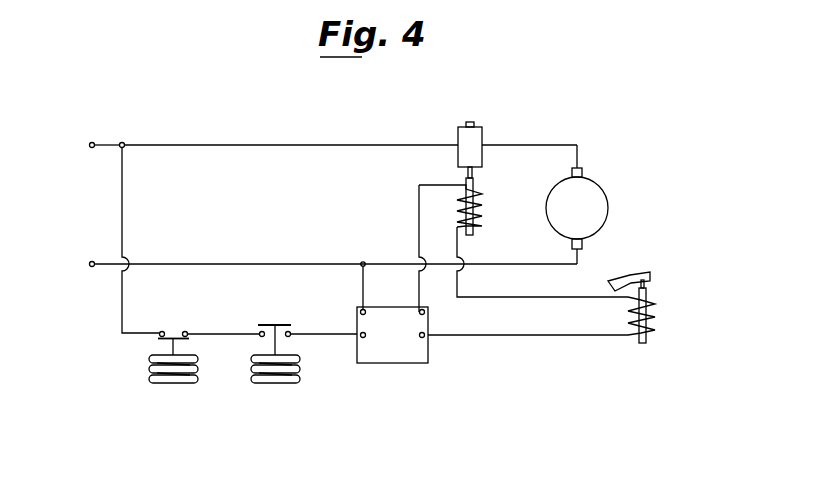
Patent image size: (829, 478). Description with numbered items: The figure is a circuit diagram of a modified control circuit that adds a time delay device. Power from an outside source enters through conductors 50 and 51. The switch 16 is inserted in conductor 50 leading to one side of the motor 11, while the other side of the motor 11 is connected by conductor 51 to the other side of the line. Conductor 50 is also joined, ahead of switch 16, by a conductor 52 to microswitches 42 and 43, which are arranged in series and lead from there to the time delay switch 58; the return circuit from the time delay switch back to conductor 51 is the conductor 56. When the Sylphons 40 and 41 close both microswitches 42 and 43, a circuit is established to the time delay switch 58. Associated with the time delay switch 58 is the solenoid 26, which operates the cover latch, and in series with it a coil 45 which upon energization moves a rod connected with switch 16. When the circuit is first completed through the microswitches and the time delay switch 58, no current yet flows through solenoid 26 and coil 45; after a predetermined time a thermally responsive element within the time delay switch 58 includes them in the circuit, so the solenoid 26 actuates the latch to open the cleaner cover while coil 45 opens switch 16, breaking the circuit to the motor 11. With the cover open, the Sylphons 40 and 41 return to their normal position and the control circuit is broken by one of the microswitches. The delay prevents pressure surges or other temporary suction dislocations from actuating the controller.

The conductor 50 is at (233, 143).
The conductor 51 is at (233, 262).
The conductor 52 is at (124, 228).
The switch 16 is at (477, 135).
The coil 45 is at (478, 205).
The motor 11 is at (600, 203).
The solenoid 26 is at (655, 298).
The microswitch 42 is at (168, 334).
The microswitch 43 is at (270, 324).
The Sylphon 40 is at (152, 380).
The Sylphon 41 is at (254, 380).
The return circuit 56 is at (366, 292).
The time delay switch 58 is at (395, 358).